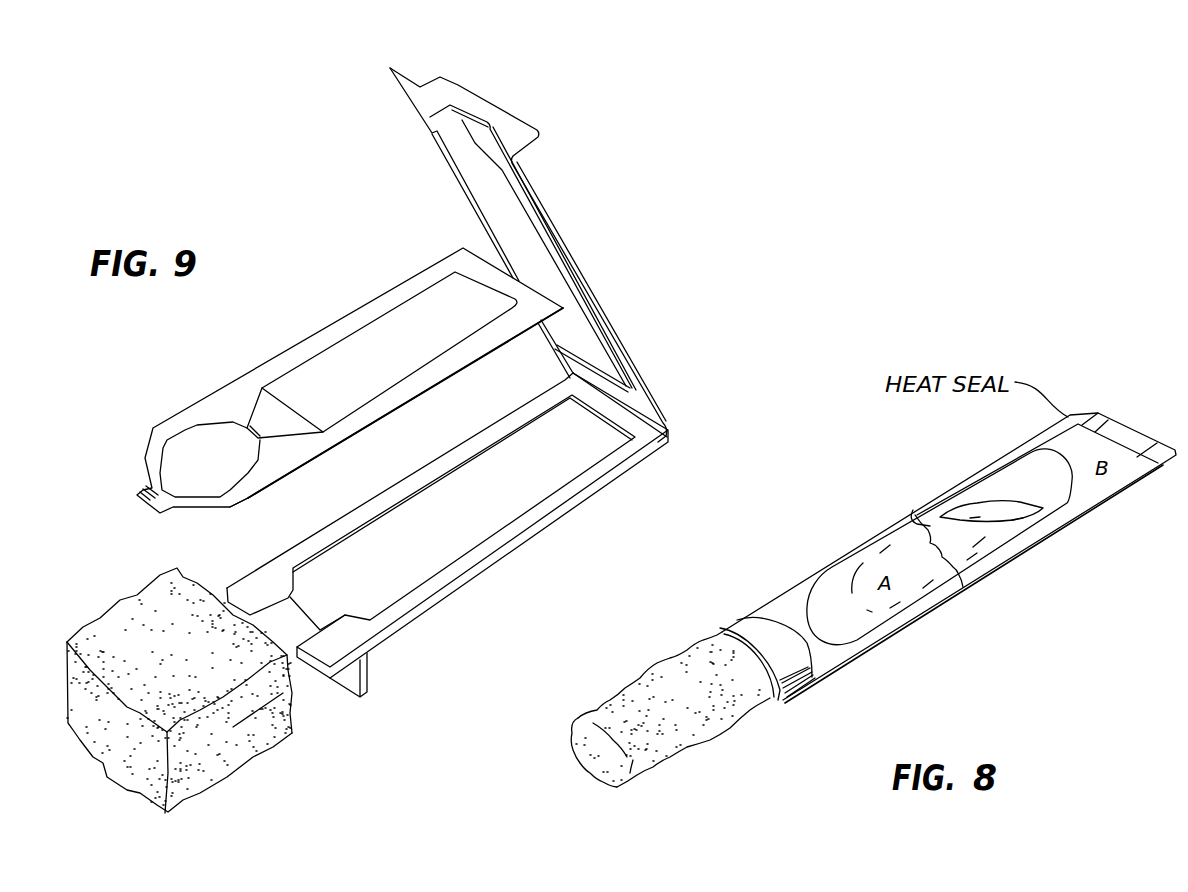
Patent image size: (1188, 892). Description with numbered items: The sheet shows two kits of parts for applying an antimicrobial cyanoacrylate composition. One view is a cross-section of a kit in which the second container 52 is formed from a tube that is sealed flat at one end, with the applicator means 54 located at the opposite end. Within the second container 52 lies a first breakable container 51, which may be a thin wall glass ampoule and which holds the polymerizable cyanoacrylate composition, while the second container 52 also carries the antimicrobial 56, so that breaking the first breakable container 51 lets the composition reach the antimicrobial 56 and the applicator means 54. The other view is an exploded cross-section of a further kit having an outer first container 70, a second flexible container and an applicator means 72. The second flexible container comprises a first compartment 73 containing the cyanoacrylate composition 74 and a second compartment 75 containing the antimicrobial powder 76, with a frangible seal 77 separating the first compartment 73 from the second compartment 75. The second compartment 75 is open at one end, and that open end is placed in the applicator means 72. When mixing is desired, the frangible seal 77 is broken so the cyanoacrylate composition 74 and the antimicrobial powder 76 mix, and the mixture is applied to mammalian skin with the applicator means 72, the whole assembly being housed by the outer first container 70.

In FIG. 9, the outer first container 70 is at (503, 558).
In FIG. 9, the applicator means 72 is at (395, 293).
In FIG. 9, the first compartment 73 is at (422, 375).
In FIG. 9, the cyanoacrylate composition 74 is at (367, 342).
In FIG. 9, the second compartment 75 is at (243, 487).
In FIG. 9, the antimicrobial powder 76 is at (172, 450).
In FIG. 9, the frangible seal 77 is at (247, 425).
In FIG. 8, the first breakable container 51 is at (1000, 480).
In FIG. 8, the second container 52 is at (945, 600).
In FIG. 8, the applicator means 54 is at (737, 720).
In FIG. 8, the antimicrobial 56 is at (813, 678).